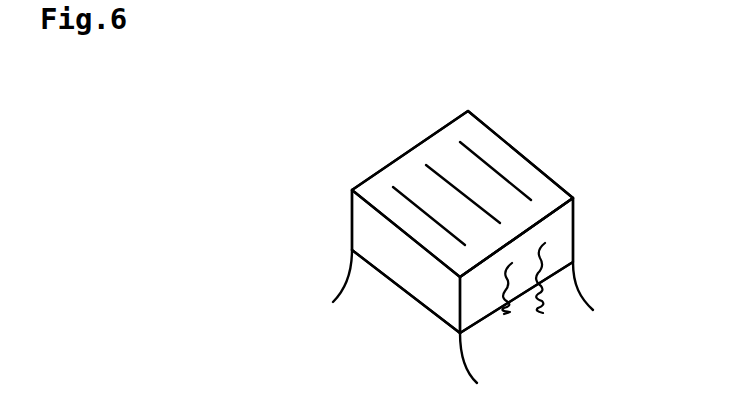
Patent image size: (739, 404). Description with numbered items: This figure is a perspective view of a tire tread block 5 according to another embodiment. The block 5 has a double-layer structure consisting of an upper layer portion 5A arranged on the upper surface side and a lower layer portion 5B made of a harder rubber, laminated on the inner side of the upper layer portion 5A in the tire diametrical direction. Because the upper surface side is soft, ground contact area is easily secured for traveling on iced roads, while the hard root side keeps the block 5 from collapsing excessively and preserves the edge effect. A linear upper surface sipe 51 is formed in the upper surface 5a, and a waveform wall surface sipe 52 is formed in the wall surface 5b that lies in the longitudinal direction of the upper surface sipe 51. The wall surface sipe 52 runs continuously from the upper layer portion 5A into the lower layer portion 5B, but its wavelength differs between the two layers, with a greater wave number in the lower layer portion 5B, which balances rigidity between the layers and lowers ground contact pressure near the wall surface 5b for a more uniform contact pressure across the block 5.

The block 5 is at (488, 232).
The upper surface 5a is at (433, 152).
The wall surface 5b is at (566, 243).
The upper layer portion 5A is at (305, 187).
The lower layer portion 5B is at (305, 245).
The upper surface sipe 51 is at (472, 150).
The wall surface sipe 52 is at (541, 305).